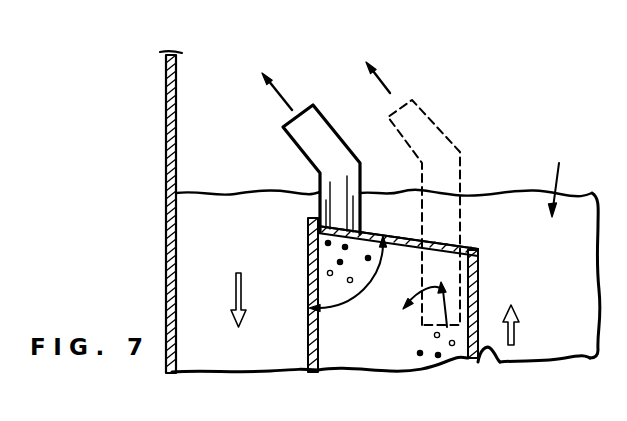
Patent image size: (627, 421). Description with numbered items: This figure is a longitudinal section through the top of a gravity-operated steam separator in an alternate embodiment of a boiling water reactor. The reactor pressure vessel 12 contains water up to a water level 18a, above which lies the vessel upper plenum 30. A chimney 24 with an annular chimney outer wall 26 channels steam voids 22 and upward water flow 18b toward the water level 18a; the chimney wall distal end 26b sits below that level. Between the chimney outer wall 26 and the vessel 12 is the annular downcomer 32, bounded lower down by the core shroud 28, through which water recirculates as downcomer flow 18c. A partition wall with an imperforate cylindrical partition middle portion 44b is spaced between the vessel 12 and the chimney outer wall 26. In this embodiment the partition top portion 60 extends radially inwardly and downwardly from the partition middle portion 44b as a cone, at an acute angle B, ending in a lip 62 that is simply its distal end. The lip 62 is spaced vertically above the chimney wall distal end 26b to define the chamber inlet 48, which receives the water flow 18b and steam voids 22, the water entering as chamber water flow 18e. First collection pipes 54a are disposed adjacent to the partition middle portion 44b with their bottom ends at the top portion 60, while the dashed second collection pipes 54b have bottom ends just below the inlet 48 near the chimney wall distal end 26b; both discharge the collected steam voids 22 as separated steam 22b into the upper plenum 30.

The reactor pressure vessel 12 is at (165, 107).
The water level 18a is at (213, 192).
The water flow 18b is at (518, 331).
The downcomer flow 18c is at (233, 287).
The chamber water flow 18e is at (448, 364).
The steam voids 22 is at (417, 340).
The separated steam 22b is at (375, 82).
The chimney 24 is at (558, 178).
The chimney outer wall 26 is at (492, 364).
The chimney wall distal end 26b is at (478, 298).
The core shroud 28 is at (514, 4).
The vessel upper plenum 30 is at (233, 106).
The downcomer 32 is at (235, 365).
The partition middle portion 44b is at (311, 340).
The chamber inlet 48 is at (478, 272).
The first collection pipes 54a is at (331, 123).
The second collection pipes 54b is at (437, 125).
The partition top portion 60 is at (368, 227).
The lip 62 is at (478, 252).
The acute angle B is at (347, 300).